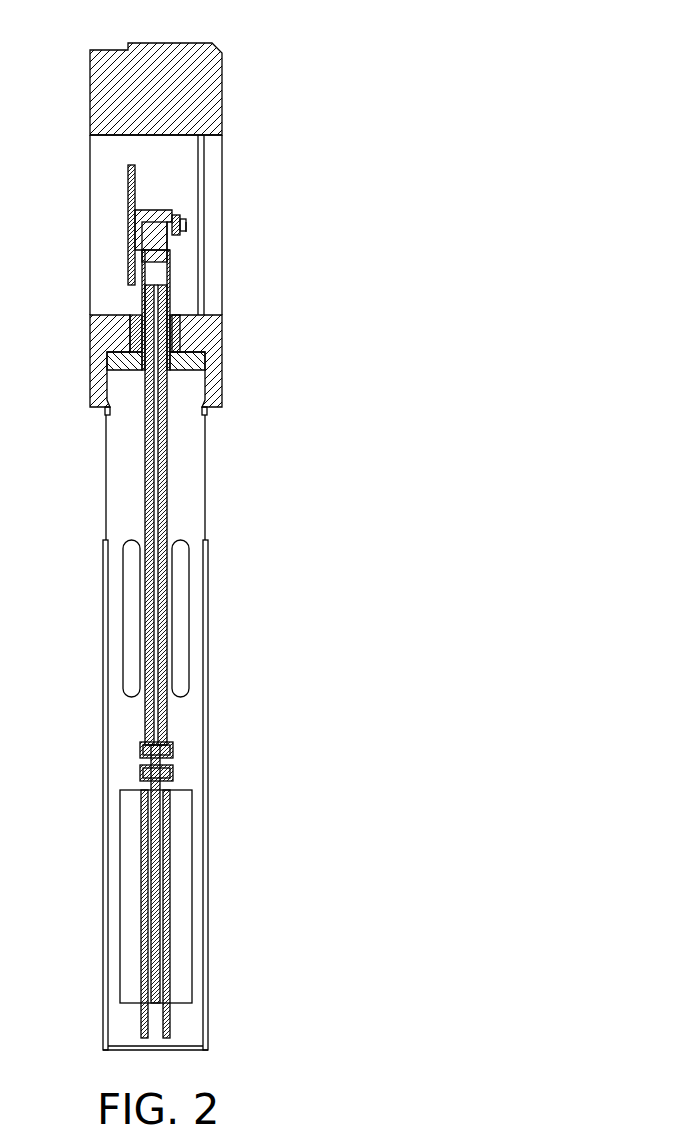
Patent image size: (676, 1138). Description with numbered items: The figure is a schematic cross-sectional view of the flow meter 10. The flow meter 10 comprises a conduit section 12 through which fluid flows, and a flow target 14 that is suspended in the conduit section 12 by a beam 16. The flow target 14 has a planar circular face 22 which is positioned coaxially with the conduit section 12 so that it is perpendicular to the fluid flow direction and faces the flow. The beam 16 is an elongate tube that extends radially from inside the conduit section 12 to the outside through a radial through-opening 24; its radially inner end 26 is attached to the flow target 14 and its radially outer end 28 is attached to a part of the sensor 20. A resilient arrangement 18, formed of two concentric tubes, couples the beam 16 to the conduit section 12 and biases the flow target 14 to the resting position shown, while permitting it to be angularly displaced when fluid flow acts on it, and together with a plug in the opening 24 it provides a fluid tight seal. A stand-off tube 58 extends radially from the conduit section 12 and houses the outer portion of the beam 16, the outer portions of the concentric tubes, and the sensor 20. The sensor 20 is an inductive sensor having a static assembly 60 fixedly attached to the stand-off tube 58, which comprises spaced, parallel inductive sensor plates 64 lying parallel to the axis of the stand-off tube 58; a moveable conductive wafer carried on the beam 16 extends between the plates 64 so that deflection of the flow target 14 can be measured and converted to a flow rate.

The flow meter 10 is at (362, 45).
The conduit section 12 is at (230, 84).
The flow target 14 is at (128, 242).
The beam 16 is at (165, 312).
The resilient arrangement 18 is at (165, 484).
The sensor 20 is at (172, 891).
The planar circular face 22 is at (128, 276).
The radial through-opening 24 is at (180, 325).
The radially inner end 26 is at (165, 285).
The radially outer end 28 is at (160, 745).
The stand-off tube 58 is at (208, 608).
The static assembly 60 is at (172, 823).
The first inductive sensor plate 64 is at (141, 1028).